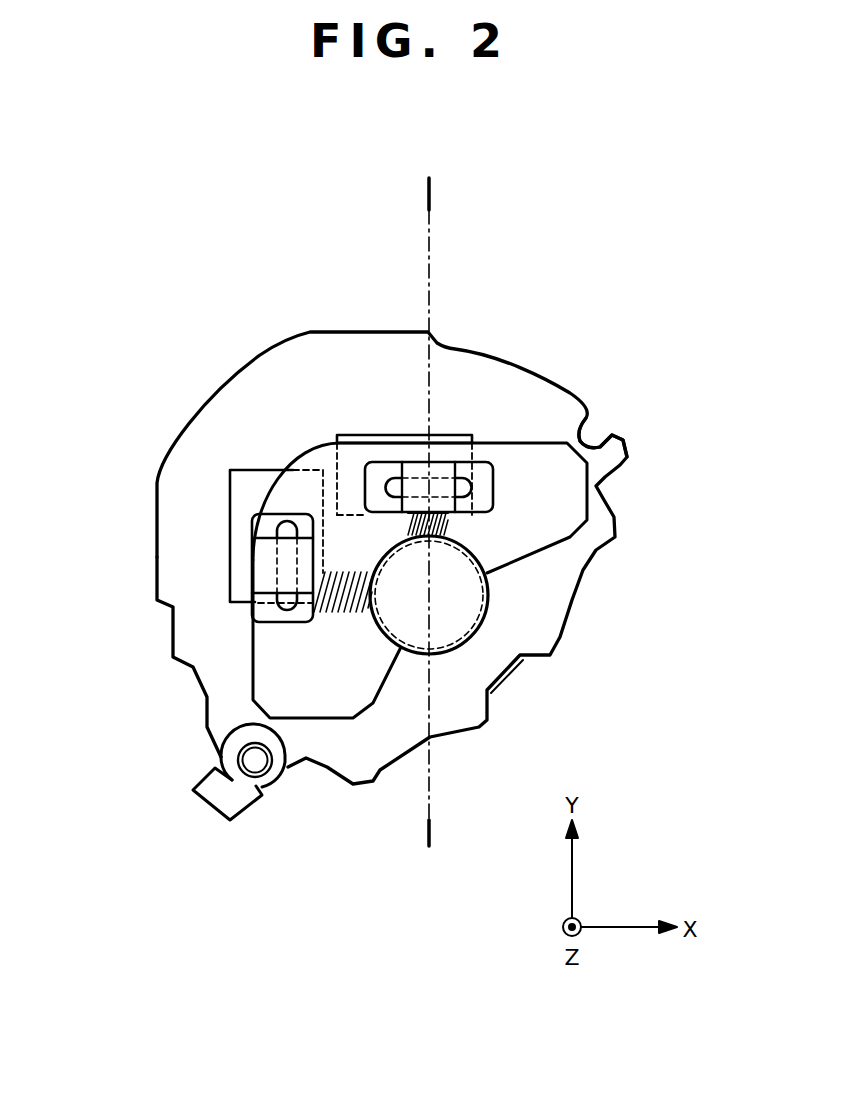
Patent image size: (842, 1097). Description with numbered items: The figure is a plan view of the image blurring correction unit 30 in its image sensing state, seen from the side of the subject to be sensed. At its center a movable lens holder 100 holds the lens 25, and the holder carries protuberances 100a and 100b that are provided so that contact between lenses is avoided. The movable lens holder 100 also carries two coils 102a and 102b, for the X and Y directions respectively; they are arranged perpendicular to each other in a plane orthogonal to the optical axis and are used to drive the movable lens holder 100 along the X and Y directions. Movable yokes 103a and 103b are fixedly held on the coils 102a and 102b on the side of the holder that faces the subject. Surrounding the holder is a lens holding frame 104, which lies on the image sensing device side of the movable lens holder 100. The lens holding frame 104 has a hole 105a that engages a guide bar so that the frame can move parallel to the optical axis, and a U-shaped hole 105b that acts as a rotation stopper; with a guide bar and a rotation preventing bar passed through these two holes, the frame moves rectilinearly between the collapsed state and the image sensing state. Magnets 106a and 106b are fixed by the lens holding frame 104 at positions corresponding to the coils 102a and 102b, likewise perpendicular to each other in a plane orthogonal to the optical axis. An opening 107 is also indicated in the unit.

The image blurring correction unit 30 is at (702, 282).
The lens holding frame 104 is at (277, 377).
The movable lens holder 100 is at (555, 492).
The protuberance 100a is at (369, 575).
The protuberance 100b is at (453, 520).
The magnet 106b is at (371, 454).
The movable yoke 103b is at (438, 490).
The coil 102b is at (483, 481).
The U-shaped hole 105b is at (595, 432).
The lens 25 is at (493, 593).
The opening 107 is at (462, 639).
The magnet 106a is at (254, 488).
The movable yoke 103a is at (287, 570).
The coil 102a is at (256, 614).
The hole 105a is at (254, 762).